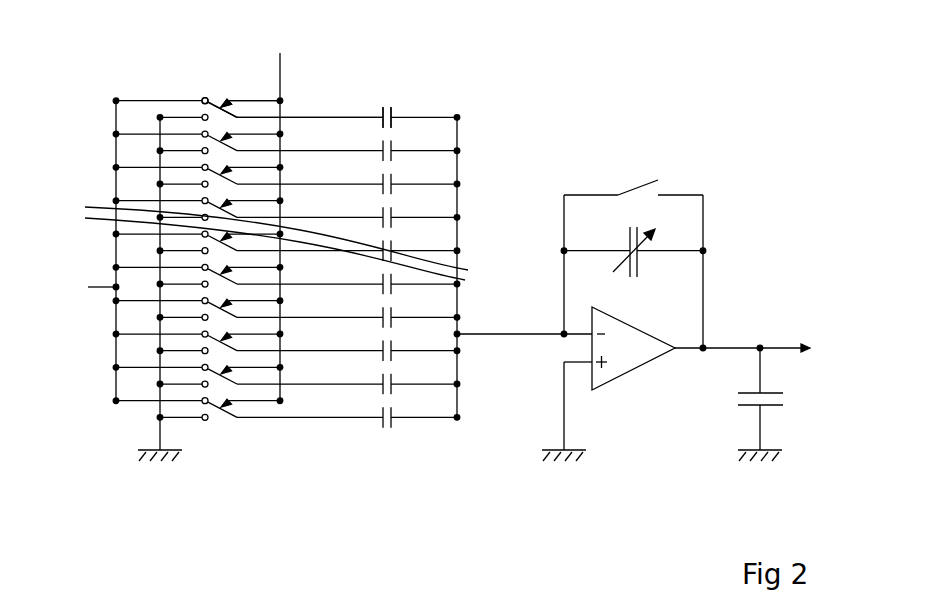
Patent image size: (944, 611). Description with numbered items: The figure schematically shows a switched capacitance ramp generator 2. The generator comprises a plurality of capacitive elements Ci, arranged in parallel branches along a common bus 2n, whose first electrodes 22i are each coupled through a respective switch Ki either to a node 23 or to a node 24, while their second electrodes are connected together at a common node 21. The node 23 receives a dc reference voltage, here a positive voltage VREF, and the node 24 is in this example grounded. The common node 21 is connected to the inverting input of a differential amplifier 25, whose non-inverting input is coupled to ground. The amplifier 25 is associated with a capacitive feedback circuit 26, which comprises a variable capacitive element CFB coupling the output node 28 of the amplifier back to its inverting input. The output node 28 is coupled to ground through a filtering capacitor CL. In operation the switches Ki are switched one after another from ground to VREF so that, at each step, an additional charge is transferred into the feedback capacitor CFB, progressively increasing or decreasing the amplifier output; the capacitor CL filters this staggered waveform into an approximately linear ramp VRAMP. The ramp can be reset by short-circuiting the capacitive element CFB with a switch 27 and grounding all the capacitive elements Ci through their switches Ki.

The switched capacitance ramp generator 2 is at (546, 108).
The common bus line 2n is at (270, 73).
The switches Ki is at (221, 103).
The first electrodes 22i is at (333, 117).
The capacitive elements Ci is at (392, 108).
The node 23 is at (112, 285).
The positive voltage VREF is at (74, 290).
The node 24 is at (160, 437).
The common node 21 is at (463, 330).
The differential amplifier 25 is at (630, 370).
The capacitive feedback circuit 26 is at (714, 242).
The switch 27 is at (645, 182).
The variable capacitive element CFB is at (633, 238).
The output node 28 is at (706, 346).
The linear ramp VRAMP is at (846, 349).
The filtering capacitor CL is at (776, 404).